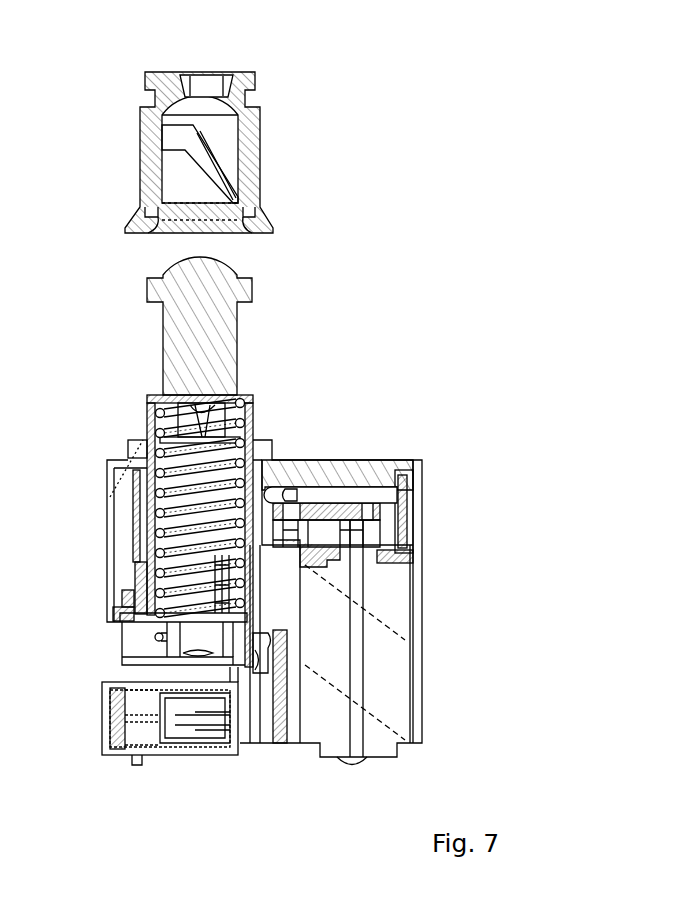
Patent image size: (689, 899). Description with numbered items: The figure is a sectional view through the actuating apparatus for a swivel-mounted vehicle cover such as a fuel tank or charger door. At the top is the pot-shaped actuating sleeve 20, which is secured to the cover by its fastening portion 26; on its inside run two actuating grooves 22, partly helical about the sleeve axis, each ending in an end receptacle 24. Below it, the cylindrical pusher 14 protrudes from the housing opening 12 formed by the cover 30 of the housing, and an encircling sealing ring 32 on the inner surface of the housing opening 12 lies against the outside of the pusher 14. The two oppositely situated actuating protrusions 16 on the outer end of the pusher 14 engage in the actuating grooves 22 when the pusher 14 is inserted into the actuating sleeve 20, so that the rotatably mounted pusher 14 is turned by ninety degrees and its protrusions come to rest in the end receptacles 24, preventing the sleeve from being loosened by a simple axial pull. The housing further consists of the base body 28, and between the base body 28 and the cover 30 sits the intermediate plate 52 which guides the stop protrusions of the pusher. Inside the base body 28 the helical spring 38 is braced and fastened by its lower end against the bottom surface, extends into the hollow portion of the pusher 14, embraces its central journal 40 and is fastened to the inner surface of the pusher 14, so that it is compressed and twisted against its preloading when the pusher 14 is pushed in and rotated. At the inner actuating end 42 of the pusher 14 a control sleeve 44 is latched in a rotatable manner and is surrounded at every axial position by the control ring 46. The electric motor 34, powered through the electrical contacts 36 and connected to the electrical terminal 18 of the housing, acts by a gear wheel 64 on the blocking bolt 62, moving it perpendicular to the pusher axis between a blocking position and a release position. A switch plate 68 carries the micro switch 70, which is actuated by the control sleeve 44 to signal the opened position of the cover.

The housing opening 12 is at (133, 452).
The pusher 14 is at (250, 420).
The actuating protrusions 16 is at (243, 290).
The electrical terminal 18 is at (105, 725).
The actuating sleeve 20 is at (253, 140).
The actuating grooves 22 is at (222, 170).
The end receptacles 24 is at (177, 141).
The fastening portion 26 is at (200, 74).
The base body 28 is at (415, 633).
The cover 30 is at (385, 468).
The sealing ring 32 is at (143, 443).
The electric motor 34 is at (400, 707).
The electrical contacts 36 is at (190, 722).
The helical spring 38 is at (160, 535).
The central journal 40 is at (227, 412).
The inner actuating end 42 is at (153, 583).
The control sleeve 44 is at (125, 602).
The control ring 46 is at (120, 612).
The intermediate plate 52 is at (400, 562).
The blocking bolt 62 is at (366, 497).
The gear wheel 64 is at (372, 522).
The switch plate 68 is at (280, 735).
The micro switch 70 is at (268, 672).